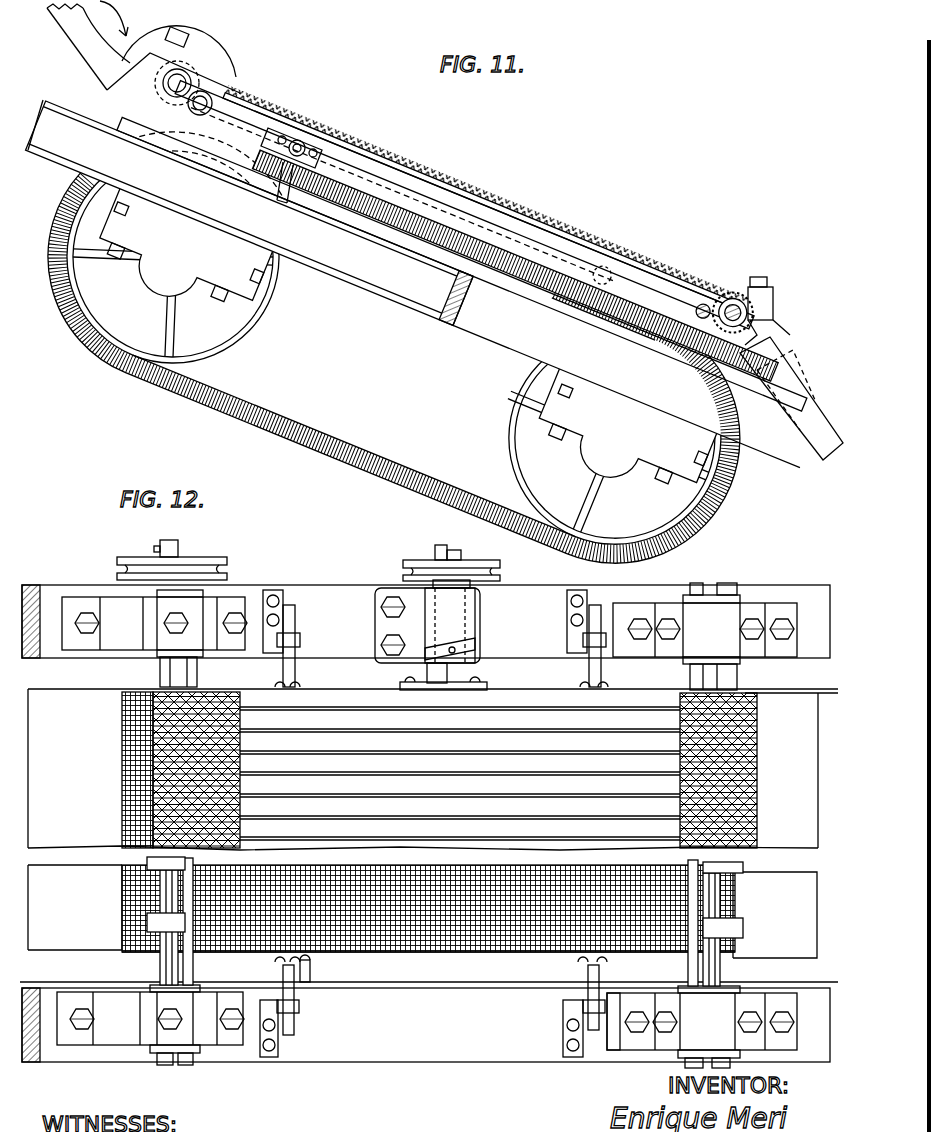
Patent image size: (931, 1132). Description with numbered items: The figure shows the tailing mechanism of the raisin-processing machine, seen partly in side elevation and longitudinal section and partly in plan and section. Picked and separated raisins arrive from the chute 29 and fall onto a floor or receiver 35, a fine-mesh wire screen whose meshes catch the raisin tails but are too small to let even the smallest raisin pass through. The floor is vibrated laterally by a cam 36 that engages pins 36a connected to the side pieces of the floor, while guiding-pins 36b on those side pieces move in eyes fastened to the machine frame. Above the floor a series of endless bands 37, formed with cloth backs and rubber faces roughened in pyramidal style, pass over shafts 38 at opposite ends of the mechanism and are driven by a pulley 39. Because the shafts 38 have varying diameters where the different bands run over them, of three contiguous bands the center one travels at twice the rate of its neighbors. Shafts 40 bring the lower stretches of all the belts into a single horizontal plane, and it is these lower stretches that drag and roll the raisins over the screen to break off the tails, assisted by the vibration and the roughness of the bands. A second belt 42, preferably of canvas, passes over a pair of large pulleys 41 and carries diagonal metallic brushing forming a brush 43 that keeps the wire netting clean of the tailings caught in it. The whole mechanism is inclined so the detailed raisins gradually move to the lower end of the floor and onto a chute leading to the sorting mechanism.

In FIG. 11, the chute 29 is at (72, 46).
In FIG. 12, the chute 29 is at (423, 823).
In FIG. 11, the floor or receiver 35 is at (513, 273).
In FIG. 12, the floor or receiver 35 is at (127, 720).
In FIG. 12, the cam 36 is at (476, 638).
In FIG. 12, the pins 36a is at (425, 650).
In FIG. 11, the guiding-pins 36b is at (300, 141).
In FIG. 12, the guiding-pins 36b is at (290, 614).
In FIG. 11, the endless bands 37 is at (580, 218).
In FIG. 12, the endless bands 37 is at (600, 708).
In FIG. 11, the shafts 38 is at (160, 90).
In FIG. 12, the shafts 38 is at (163, 883).
In FIG. 11, the pulley 39 is at (214, 45).
In FIG. 12, the pulley 39 is at (205, 556).
In FIG. 11, the shafts 40 is at (197, 107).
In FIG. 12, the shafts 40 is at (198, 862).
In FIG. 11, the large pulleys 41 is at (508, 468).
In FIG. 11, the second belt 42 is at (420, 473).
In FIG. 11, the brush 43 is at (392, 478).